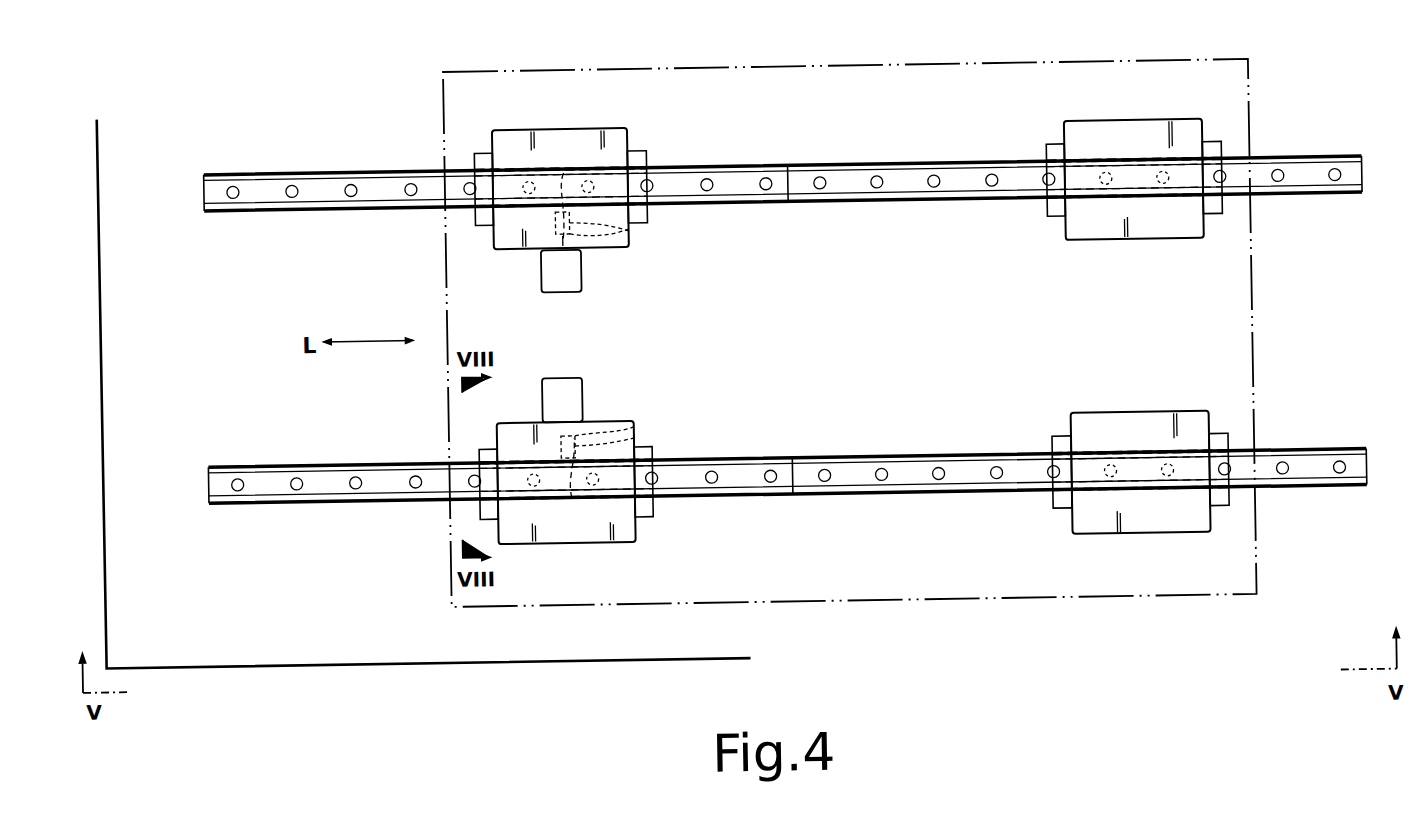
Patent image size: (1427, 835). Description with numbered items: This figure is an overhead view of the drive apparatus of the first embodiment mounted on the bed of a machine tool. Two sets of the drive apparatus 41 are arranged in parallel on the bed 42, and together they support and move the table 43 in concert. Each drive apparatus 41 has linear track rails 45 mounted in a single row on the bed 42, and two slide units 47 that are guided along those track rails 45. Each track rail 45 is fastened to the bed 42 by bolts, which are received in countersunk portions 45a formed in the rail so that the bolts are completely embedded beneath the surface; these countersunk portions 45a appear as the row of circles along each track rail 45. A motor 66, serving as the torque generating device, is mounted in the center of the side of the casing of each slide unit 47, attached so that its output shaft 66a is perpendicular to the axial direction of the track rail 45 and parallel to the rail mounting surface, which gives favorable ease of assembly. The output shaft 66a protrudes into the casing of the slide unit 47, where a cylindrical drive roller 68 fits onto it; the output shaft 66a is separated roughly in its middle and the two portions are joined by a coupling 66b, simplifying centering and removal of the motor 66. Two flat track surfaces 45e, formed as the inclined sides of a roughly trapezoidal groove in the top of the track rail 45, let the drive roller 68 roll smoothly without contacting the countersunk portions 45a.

The drive apparatus 41 is at (1366, 169).
The bed 42 is at (344, 645).
The table 43 is at (1015, 76).
The track rail 45 is at (383, 211).
The countersunk portion 45a is at (284, 186).
The track surface 45e is at (330, 174).
The slide unit 47 is at (503, 251).
The motor 66 is at (578, 272).
The output shaft 66a is at (617, 253).
The coupling 66b is at (627, 236).
The drive roller 68 is at (562, 175).